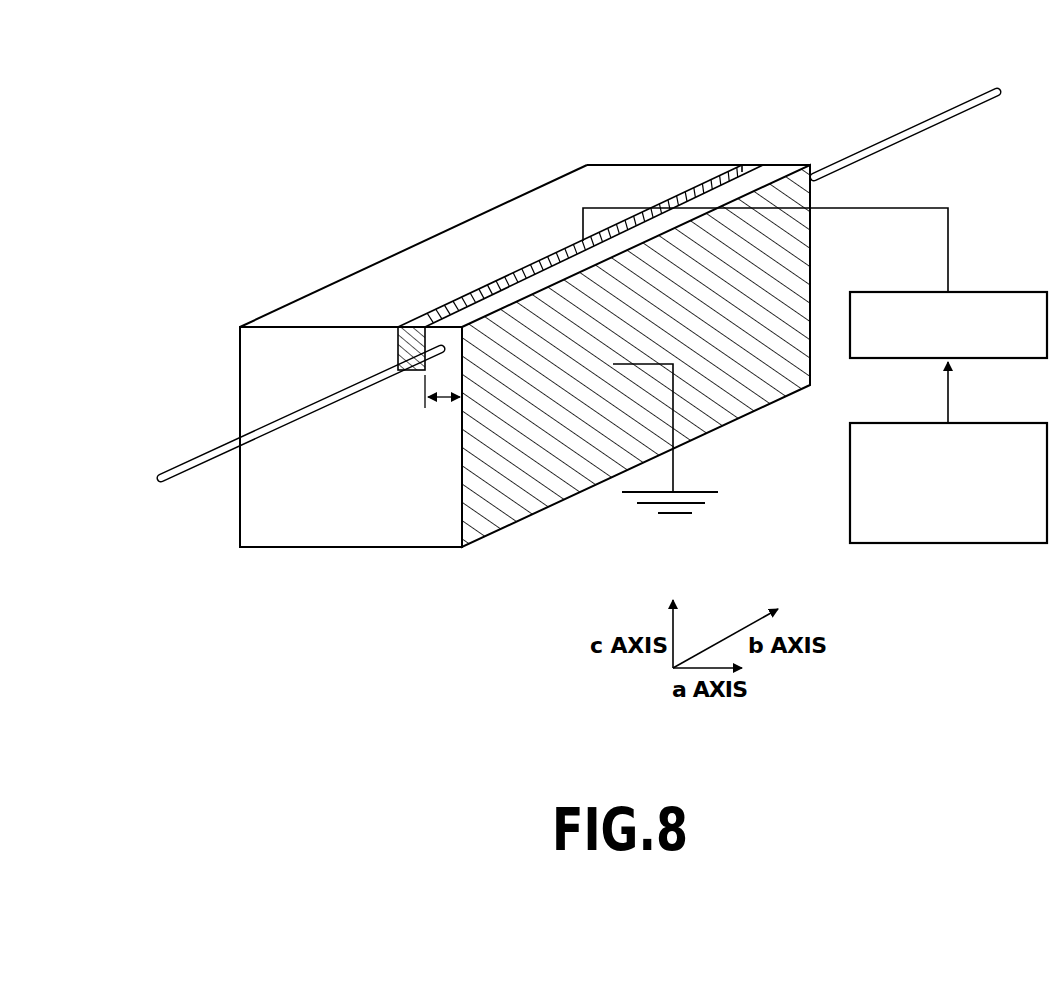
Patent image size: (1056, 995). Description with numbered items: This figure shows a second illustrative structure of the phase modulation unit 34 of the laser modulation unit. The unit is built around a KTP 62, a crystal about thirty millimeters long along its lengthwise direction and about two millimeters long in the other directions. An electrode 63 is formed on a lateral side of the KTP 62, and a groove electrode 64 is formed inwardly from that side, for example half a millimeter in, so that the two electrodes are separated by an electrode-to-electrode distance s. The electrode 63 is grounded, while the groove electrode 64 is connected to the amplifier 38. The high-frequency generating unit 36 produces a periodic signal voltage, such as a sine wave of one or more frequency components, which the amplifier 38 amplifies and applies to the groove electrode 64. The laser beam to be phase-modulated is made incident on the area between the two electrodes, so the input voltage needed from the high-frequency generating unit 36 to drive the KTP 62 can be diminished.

The phase modulation unit 34 is at (579, 320).
The KTP 62 is at (317, 523).
The electrode 63 is at (563, 483).
The groove electrode 64 is at (508, 276).
The high-frequency generating unit 36 is at (975, 423).
The amplifier 38 is at (983, 292).